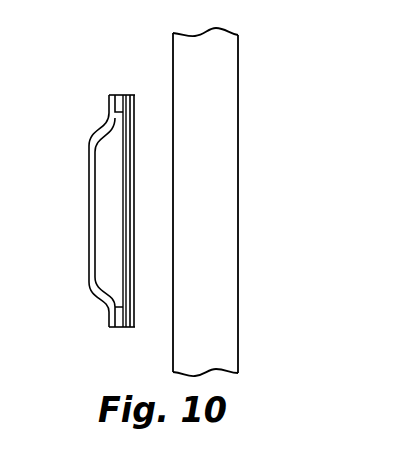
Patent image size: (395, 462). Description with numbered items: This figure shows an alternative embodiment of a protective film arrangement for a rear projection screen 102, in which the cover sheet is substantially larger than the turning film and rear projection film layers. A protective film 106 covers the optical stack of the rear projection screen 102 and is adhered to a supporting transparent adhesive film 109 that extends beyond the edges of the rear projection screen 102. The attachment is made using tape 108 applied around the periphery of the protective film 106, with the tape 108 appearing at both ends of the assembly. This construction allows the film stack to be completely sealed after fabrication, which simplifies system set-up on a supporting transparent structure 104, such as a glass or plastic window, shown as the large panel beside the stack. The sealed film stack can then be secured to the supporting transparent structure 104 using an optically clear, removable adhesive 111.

The rear projection screen 102 is at (92, 193).
The supporting transparent structure 104 is at (226, 180).
The protective film 106 is at (88, 245).
The tape 108 is at (112, 93).
The supporting transparent adhesive film 109 is at (123, 95).
The optically clear adhesive 111 is at (129, 94).